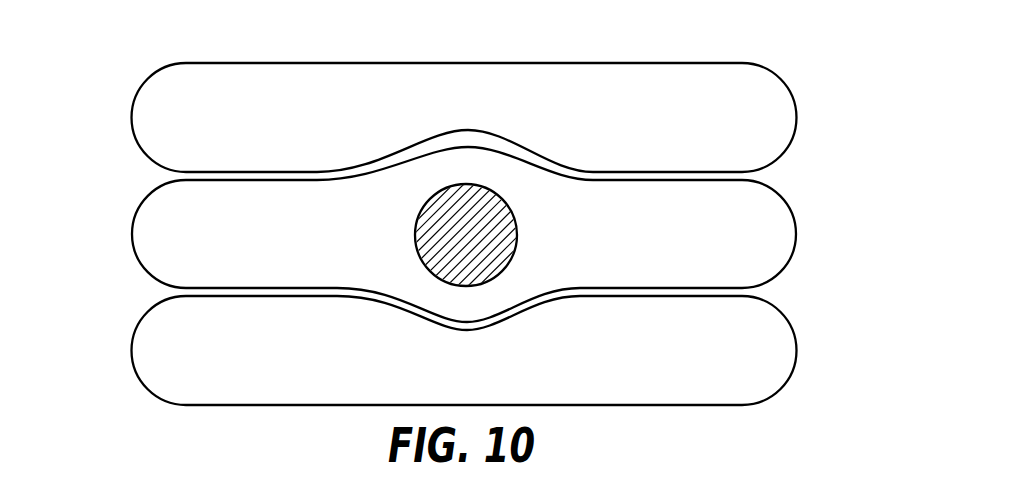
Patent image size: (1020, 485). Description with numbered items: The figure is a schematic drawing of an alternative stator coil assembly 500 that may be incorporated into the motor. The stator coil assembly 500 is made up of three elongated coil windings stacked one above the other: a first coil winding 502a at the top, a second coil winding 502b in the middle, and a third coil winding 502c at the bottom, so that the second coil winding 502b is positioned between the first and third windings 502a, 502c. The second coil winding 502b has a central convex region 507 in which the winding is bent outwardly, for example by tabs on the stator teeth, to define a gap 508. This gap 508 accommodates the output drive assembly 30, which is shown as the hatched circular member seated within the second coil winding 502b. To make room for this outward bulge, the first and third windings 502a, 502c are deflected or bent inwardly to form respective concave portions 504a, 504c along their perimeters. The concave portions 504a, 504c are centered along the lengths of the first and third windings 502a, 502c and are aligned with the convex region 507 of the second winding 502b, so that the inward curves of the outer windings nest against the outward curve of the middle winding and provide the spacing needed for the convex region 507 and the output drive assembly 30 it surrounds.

The stator coil assembly 500 is at (836, 113).
The first coil winding 502a is at (153, 118).
The second coil winding 502b is at (153, 238).
The third coil winding 502c is at (153, 358).
The concave portion 504a is at (507, 137).
The concave portion 504c is at (516, 311).
The central convex region 507 is at (523, 313).
The gap 508 is at (542, 212).
The output drive assembly 30 is at (440, 187).